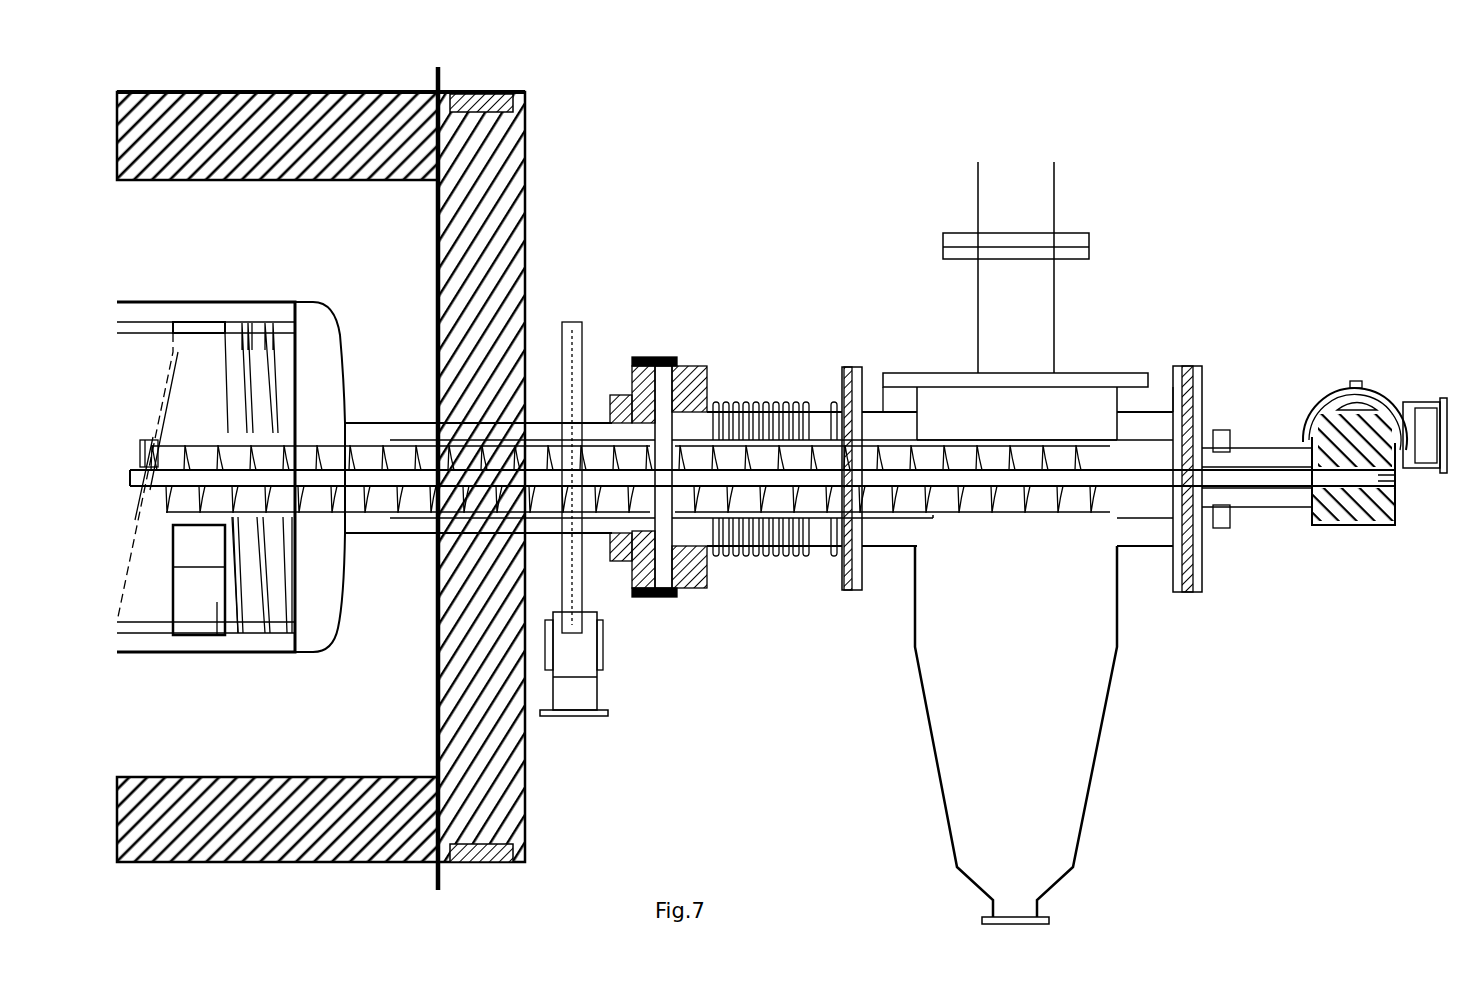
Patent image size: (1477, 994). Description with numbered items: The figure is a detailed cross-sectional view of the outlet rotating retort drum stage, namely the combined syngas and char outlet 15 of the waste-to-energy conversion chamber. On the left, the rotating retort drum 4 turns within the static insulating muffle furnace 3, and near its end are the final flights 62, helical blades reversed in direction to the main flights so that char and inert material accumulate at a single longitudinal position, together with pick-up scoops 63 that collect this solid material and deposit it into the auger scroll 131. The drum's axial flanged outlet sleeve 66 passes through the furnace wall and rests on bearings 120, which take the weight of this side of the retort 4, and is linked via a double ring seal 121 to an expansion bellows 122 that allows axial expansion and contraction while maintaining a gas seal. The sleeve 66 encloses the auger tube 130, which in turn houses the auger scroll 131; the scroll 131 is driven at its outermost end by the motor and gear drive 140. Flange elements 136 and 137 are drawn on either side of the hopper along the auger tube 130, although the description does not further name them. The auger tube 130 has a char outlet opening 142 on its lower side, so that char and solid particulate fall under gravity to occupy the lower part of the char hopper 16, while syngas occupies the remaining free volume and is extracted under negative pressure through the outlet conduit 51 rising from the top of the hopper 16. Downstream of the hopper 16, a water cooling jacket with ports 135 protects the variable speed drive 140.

The muffle furnace 3 is at (525, 178).
The rotating retort drum 4 is at (318, 310).
The combined syngas and char outlet 15 is at (822, 147).
The char hopper 16 is at (1090, 760).
The conduit 51 is at (1054, 205).
The final flights 62 is at (257, 328).
The pick-up scoops 63 is at (197, 619).
The outlet sleeve 66 is at (372, 422).
The bearings 120 is at (566, 716).
The double ring seal 121 is at (654, 342).
The expansion bellows 122 is at (750, 573).
The auger tube 130 is at (333, 500).
The auger scroll 131 is at (345, 515).
The water cooling jacket ports 135 is at (1222, 532).
The flange 136 is at (858, 594).
The flange 137 is at (1190, 366).
The motor and gear drive 140 is at (1382, 370).
The char outlet opening 142 is at (1112, 525).